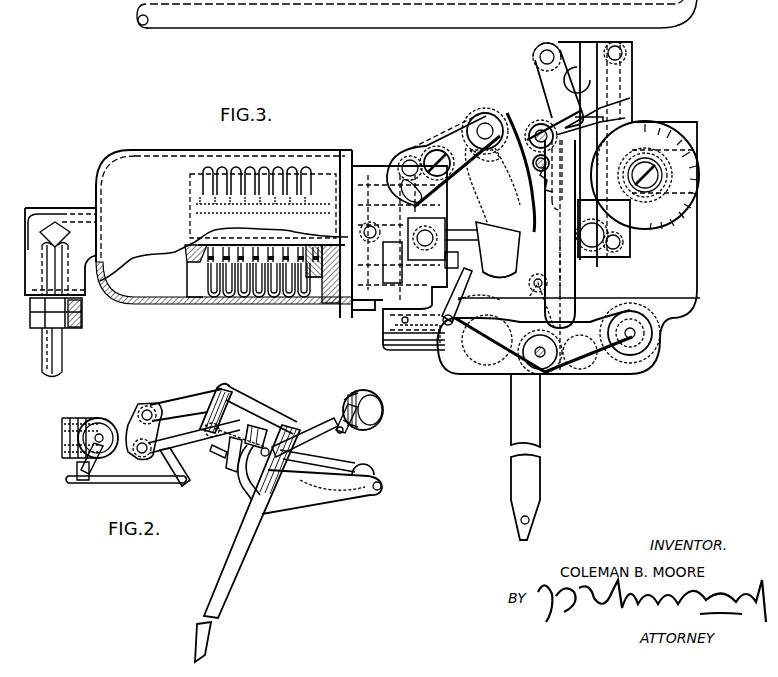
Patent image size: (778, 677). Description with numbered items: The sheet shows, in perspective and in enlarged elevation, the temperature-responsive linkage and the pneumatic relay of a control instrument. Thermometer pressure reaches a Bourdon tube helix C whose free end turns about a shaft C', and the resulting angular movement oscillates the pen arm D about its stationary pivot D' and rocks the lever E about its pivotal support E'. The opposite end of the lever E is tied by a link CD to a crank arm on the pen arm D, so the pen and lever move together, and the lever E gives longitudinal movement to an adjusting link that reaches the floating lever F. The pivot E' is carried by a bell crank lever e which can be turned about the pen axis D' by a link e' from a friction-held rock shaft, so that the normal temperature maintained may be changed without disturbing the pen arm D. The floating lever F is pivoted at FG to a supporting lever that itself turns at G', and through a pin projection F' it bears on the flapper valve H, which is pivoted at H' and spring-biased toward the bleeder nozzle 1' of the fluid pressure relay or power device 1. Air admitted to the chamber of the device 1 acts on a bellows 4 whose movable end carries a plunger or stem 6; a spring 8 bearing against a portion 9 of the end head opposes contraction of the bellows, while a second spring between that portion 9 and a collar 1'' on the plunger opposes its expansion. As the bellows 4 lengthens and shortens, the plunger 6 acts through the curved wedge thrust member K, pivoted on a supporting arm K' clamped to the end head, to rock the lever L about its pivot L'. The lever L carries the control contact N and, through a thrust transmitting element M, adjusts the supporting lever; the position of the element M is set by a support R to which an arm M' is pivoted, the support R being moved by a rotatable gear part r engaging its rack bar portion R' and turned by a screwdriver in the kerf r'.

In FIG. 3, the fluid pressure relay or power device 1 is at (224, 223).
In FIG. 3, the collar 1'' is at (454, 257).
In FIG. 3, the vent or bleeder outlet nozzle 1' is at (480, 310).
In FIG. 3, the bellows 4 is at (293, 300).
In FIG. 3, the plunger or stem 6 is at (242, 300).
In FIG. 3, the spring 8 is at (276, 300).
In FIG. 3, the portion of end head 9 is at (326, 300).
In FIG. 3, the thrust member K is at (499, 283).
In FIG. 3, the supporting arm K' is at (443, 159).
In FIG. 3, the pivotal support of lever G G' is at (485, 119).
In FIG. 3, the lever L is at (499, 172).
In FIG. 3, the pivot of lever L L' is at (580, 305).
In FIG. 3, the thrust transmitting element M is at (554, 177).
In FIG. 3, the link or arm M' is at (552, 85).
In FIG. 3, the flapper valve H is at (560, 234).
In FIG. 3, the pivot of flapper valve H' is at (612, 113).
In FIG. 3, the support R is at (610, 153).
In FIG. 3, the rack bar portion R' is at (617, 232).
In FIG. 3, the rotatable part r is at (665, 230).
In FIG. 3, the kerf r' is at (686, 171).
In FIG. 3, the floating lever F is at (569, 349).
In FIG. 3, the pin projection F' is at (533, 306).
In FIG. 3, the pivotal connection FG is at (545, 374).
In FIG. 3, the control switch or contact N is at (530, 520).
In FIG. 2, the Bourdon tube helix C is at (86, 427).
In FIG. 2, the shaft C' is at (93, 429).
In FIG. 2, the link CD is at (134, 420).
In FIG. 2, the lever E is at (222, 415).
In FIG. 2, the pivotal support of lever E E' is at (337, 489).
In FIG. 2, the pen arm D is at (241, 467).
In FIG. 2, the pivotal support of pen arm D' is at (237, 462).
In FIG. 2, the bell crank lever e is at (317, 496).
In FIG. 2, the link e' is at (305, 431).